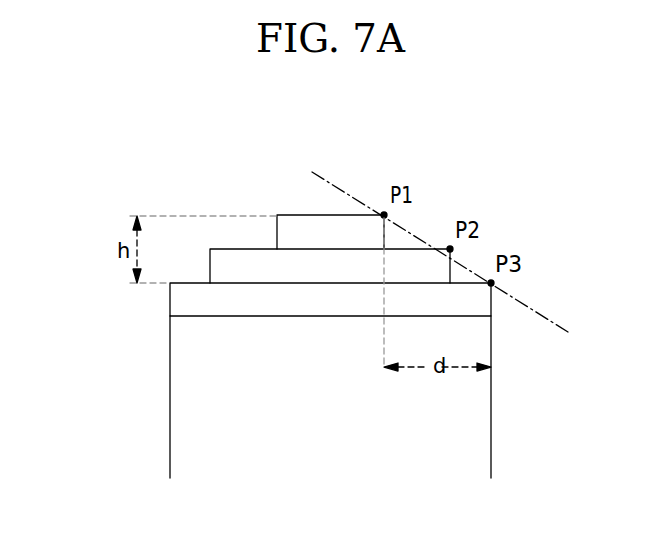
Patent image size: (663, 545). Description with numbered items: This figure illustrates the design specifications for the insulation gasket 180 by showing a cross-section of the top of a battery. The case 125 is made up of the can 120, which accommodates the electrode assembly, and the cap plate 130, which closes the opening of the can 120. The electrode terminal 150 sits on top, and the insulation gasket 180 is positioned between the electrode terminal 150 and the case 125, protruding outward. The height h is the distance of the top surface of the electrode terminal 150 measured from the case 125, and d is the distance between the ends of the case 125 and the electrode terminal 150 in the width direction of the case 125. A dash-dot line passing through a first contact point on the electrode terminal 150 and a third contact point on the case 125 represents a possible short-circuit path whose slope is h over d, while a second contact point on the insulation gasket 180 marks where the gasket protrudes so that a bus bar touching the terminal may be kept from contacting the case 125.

The can 120 is at (88, 298).
The case 125 is at (264, 380).
The cap plate 130 is at (172, 303).
The electrode terminal 150 is at (297, 227).
The insulation gasket 180 is at (229, 265).